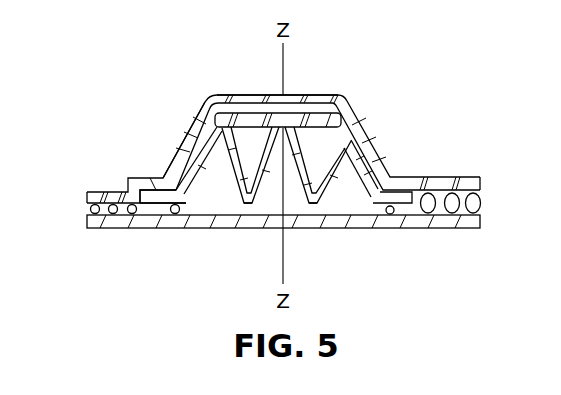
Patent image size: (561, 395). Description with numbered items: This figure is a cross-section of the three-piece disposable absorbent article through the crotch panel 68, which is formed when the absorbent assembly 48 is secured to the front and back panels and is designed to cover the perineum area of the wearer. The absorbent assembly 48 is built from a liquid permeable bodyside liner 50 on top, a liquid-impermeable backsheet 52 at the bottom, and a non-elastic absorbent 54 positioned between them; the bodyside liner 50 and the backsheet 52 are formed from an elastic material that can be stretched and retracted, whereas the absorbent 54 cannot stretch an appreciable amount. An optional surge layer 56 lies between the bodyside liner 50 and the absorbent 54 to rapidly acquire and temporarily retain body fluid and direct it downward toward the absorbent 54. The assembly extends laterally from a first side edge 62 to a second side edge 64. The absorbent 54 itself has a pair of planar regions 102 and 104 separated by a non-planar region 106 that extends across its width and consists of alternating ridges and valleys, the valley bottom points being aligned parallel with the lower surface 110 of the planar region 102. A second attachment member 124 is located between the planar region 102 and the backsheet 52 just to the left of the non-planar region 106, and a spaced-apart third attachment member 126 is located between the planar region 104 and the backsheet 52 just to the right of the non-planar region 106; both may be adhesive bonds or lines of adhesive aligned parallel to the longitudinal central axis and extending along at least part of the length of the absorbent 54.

The absorbent assembly 48 is at (376, 135).
The bodyside liner 50 is at (320, 94).
The backsheet 52 is at (463, 225).
The absorbent 54 is at (195, 176).
The surge layer 56 is at (343, 103).
The first side edge 62 is at (87, 218).
The second side edge 64 is at (481, 212).
The crotch panel 68 is at (455, 70).
The planar region 102 is at (163, 203).
The planar region 104 is at (403, 203).
The non-planar region 106 is at (203, 148).
The lower surface 110 is at (343, 183).
The second attachment member 124 is at (178, 225).
The third attachment member 126 is at (388, 216).